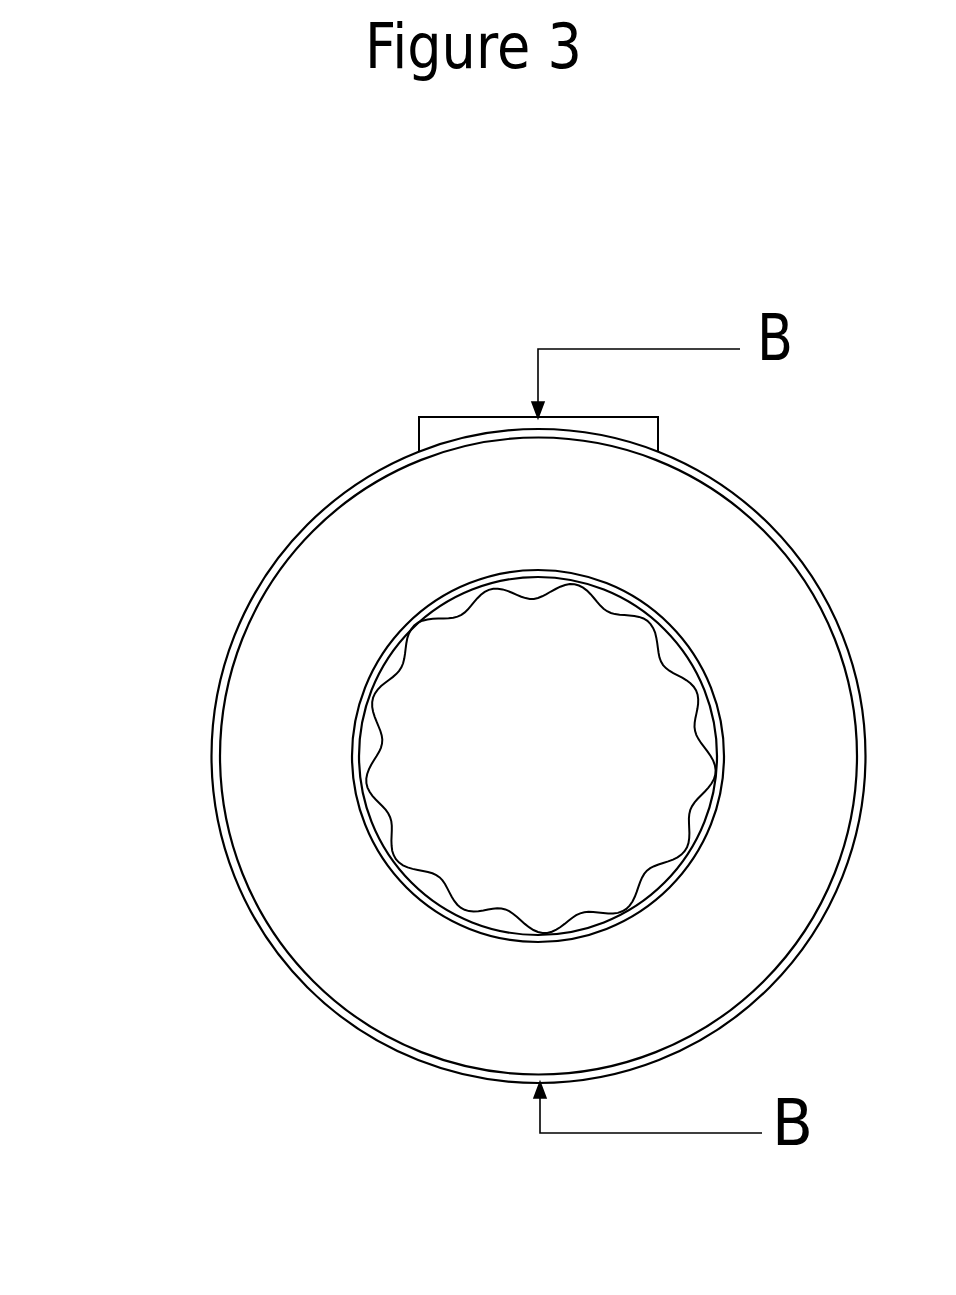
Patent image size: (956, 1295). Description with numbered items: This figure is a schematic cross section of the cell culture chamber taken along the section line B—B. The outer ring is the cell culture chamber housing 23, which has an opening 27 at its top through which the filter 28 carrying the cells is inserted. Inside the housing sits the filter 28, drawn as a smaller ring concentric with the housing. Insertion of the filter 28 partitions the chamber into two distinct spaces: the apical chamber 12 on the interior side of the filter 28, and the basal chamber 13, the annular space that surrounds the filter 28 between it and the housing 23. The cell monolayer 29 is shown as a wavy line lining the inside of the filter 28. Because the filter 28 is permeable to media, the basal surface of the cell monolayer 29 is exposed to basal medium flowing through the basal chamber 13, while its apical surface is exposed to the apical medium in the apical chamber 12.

The apical chamber 12 is at (607, 758).
The basal chamber 13 is at (612, 1012).
The cell culture chamber housing 23 is at (260, 583).
The opening 27 is at (457, 417).
The filter 28 is at (440, 597).
The cell monolayer 29 is at (575, 598).